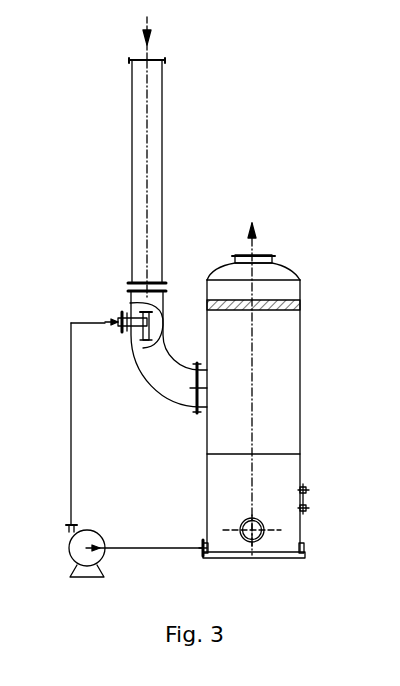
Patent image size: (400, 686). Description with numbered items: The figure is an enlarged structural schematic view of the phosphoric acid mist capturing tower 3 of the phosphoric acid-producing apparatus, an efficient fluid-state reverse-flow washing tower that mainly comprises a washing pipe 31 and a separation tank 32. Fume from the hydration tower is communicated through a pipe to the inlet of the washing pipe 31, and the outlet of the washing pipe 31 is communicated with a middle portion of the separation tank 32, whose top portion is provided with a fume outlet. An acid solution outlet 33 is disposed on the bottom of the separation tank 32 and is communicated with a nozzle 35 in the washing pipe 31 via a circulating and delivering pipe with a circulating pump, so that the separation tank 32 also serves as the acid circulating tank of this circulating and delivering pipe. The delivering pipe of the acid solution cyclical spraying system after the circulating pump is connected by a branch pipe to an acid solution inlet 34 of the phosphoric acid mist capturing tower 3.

The phosphoric acid mist capturing tower 3 is at (135, 358).
The washing pipe 31 is at (135, 175).
The separation tank 32 is at (360, 285).
The acid solution outlet 33 is at (203, 545).
The acid solution inlet 34 is at (305, 500).
The nozzle 35 is at (143, 314).